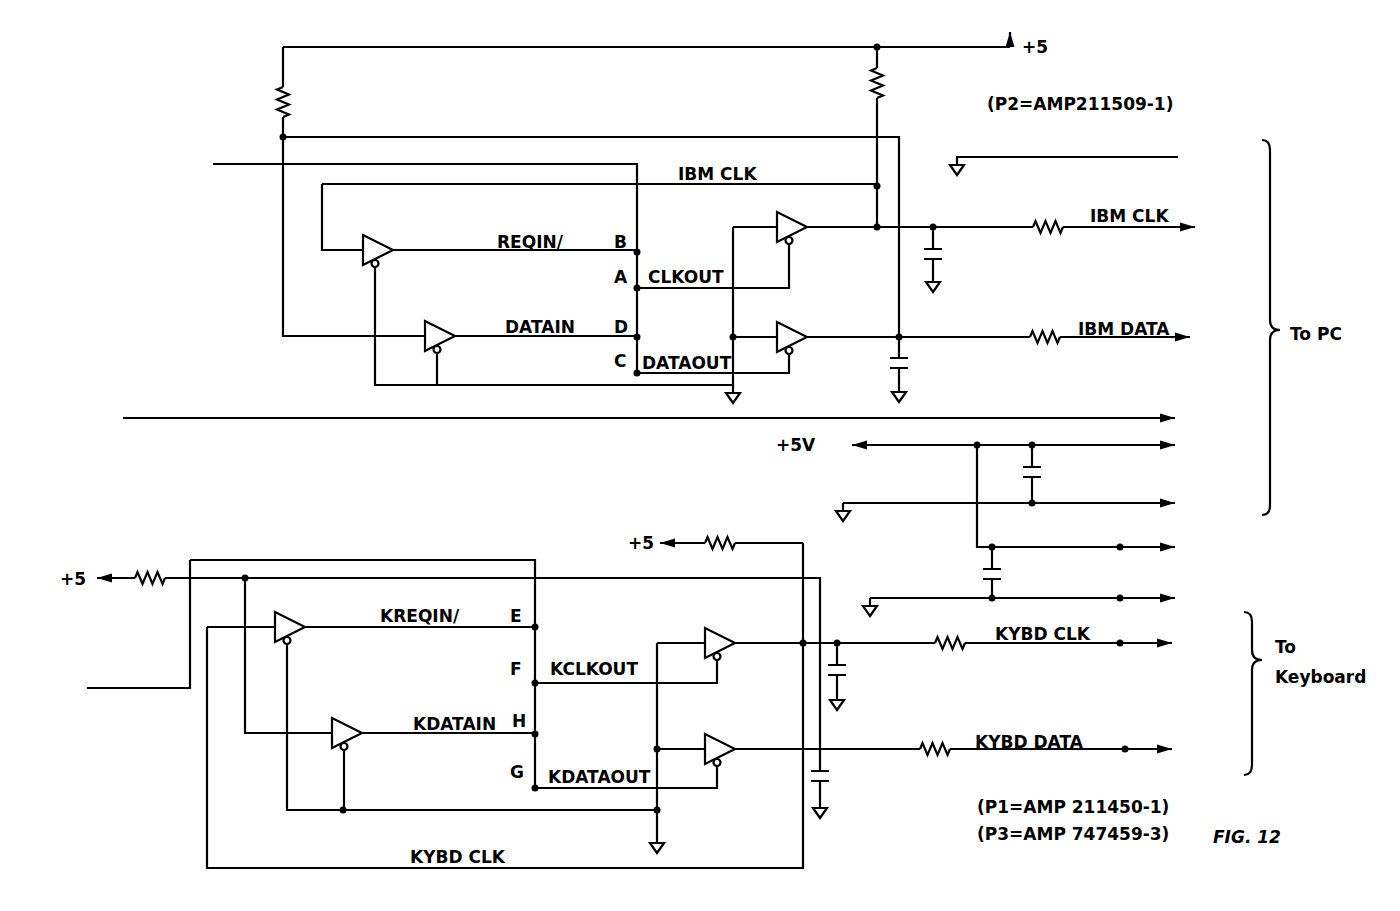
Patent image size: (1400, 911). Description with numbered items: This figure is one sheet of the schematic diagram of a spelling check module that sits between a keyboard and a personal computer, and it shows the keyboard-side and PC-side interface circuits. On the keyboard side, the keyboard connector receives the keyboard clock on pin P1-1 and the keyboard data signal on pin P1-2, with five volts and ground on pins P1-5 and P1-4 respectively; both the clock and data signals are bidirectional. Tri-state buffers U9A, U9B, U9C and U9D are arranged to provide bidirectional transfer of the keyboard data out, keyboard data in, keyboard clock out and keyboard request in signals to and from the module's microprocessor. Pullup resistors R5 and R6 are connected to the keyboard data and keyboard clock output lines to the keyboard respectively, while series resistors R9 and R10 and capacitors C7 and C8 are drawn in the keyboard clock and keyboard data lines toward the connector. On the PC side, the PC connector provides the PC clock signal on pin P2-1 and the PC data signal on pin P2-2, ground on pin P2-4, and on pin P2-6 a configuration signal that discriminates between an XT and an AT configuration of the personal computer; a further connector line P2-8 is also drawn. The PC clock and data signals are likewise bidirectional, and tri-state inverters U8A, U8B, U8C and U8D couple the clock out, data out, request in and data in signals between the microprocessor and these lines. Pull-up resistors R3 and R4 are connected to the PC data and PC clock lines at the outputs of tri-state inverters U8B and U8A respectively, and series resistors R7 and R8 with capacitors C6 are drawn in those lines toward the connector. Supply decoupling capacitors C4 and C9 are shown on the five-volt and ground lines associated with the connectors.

The pull-up resistor R3 is at (307, 107).
The pull-up resistor R4 is at (901, 87).
The pullup resistor R5 is at (154, 578).
The pullup resistor R6 is at (727, 543).
The series resistor 60 ohm IBM CLK R7 is at (1048, 234).
The series resistor 50 ohm IBM DATA R8 is at (1045, 344).
The series resistor 50 ohm KYBD CLK R9 is at (950, 651).
The series resistor 50 ohm KYBD DATA R10 is at (936, 754).
The capacitor 10MF C4 is at (1061, 478).
The capacitor 47PF C6 is at (942, 313).
The capacitor 47PF C7 is at (864, 676).
The capacitor 47PF C8 is at (848, 780).
The capacitor 10MF C9 is at (1022, 579).
The tri-state inverter U8A is at (798, 231).
The tri-state inverter U8B is at (802, 341).
The HC125 tri-state buffer U8C is at (444, 341).
The HC125 tri-state buffer U8D is at (383, 256).
The tri-state buffer U9A is at (728, 644).
The tri-state buffer U9B is at (728, 754).
The tri-state buffer U9C is at (358, 739).
The tri-state buffer U9D is at (297, 632).
The PC connector pin P2-8 is at (1150, 157).
The connector P2 pin 1 P2-1 is at (1213, 234).
The connector P2 pin 2 P2-2 is at (1207, 344).
The connector P2 pin 6 P2-6 is at (1193, 437).
The connector P2 pin 4 P2-4 is at (1193, 508).
The connector P1 pin 5 P1-5 is at (1193, 548).
The connector P1 pin 4 P1-4 is at (1193, 599).
The connector P1 pin 1 P1-1 is at (1190, 649).
The connector P1 pin 2 P1-2 is at (1188, 754).